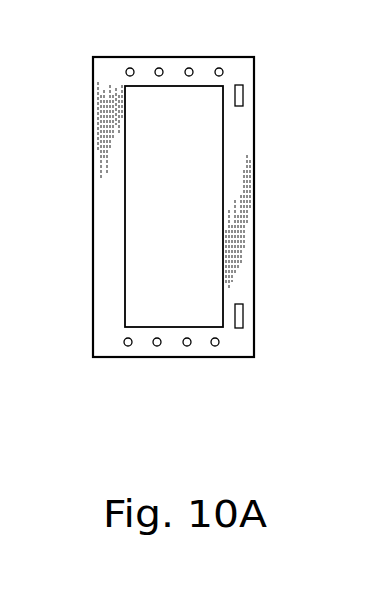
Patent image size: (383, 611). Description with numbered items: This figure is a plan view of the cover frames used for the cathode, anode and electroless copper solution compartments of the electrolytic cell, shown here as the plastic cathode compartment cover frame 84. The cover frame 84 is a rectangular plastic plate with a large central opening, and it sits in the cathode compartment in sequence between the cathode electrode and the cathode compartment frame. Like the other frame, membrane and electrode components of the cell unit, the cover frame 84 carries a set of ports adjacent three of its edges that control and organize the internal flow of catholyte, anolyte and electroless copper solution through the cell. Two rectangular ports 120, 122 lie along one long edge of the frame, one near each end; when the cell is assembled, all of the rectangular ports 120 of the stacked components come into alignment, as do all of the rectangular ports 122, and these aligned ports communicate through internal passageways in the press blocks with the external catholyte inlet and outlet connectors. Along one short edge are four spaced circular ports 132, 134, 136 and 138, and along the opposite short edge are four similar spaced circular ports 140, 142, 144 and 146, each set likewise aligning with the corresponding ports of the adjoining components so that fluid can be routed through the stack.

The cathode compartment cover frame 84 is at (106, 190).
The rectangular port 120 is at (244, 97).
The rectangular port 122 is at (244, 320).
The circular port 132 is at (125, 346).
The circular port 134 is at (157, 347).
The circular port 136 is at (189, 347).
The circular port 138 is at (218, 346).
The circular port 140 is at (127, 69).
The circular port 142 is at (158, 68).
The circular port 144 is at (190, 68).
The circular port 146 is at (221, 68).